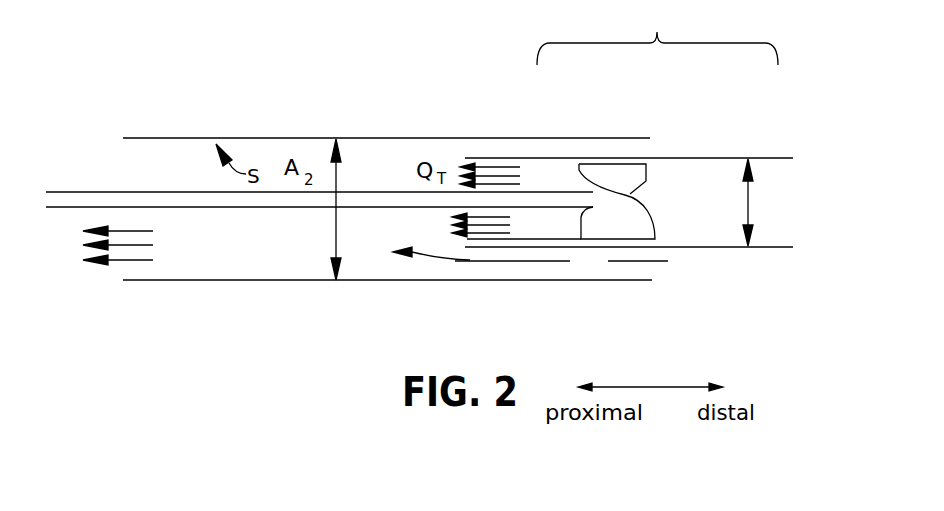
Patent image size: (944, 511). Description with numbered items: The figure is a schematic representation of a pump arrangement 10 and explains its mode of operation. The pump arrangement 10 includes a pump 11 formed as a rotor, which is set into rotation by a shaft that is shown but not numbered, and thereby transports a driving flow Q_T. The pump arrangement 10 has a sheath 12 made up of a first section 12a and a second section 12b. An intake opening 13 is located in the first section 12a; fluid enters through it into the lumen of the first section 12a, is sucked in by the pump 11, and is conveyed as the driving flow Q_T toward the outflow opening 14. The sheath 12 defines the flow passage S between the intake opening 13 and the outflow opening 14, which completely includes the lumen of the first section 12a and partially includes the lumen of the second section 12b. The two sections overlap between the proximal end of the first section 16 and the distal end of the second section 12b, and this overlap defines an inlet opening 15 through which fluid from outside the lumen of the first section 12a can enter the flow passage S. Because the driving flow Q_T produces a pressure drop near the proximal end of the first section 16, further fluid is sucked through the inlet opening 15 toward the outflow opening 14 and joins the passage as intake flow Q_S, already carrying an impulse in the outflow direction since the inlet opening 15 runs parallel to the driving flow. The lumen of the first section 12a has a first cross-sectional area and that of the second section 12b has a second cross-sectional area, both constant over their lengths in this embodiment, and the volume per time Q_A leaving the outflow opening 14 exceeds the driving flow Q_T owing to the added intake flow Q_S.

The pump arrangement 10 is at (372, 72).
The pump 11 is at (636, 185).
The sheath 12 is at (629, 127).
The first section 12a is at (740, 158).
The second section 12b is at (535, 138).
The intake opening 13 is at (809, 182).
The outflow opening 14 is at (114, 156).
The inlet opening 15 is at (508, 145).
The proximal end of the first section 16 is at (452, 238).